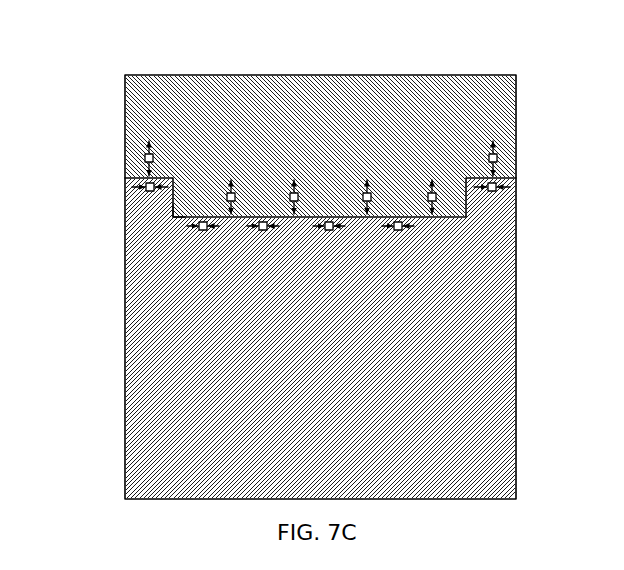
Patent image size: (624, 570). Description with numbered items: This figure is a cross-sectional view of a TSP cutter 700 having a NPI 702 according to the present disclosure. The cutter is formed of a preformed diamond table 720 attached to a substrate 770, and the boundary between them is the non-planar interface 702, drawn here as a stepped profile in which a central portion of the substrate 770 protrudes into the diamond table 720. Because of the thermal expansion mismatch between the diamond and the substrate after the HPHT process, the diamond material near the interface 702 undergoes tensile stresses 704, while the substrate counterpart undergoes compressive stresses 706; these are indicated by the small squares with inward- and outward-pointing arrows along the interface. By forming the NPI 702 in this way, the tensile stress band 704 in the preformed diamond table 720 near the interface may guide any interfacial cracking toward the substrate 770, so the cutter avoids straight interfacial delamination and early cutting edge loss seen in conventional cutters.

The TSP cutter 700 is at (309, 259).
The NPI 702 is at (456, 220).
The tensile stresses 704 is at (139, 156).
The compressive stresses 706 is at (170, 229).
The preformed diamond table 720 is at (389, 141).
The substrate 770 is at (328, 348).